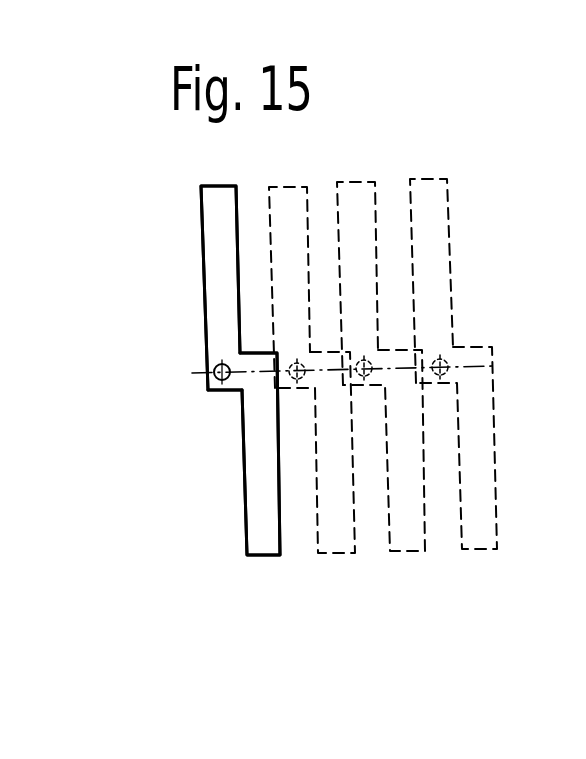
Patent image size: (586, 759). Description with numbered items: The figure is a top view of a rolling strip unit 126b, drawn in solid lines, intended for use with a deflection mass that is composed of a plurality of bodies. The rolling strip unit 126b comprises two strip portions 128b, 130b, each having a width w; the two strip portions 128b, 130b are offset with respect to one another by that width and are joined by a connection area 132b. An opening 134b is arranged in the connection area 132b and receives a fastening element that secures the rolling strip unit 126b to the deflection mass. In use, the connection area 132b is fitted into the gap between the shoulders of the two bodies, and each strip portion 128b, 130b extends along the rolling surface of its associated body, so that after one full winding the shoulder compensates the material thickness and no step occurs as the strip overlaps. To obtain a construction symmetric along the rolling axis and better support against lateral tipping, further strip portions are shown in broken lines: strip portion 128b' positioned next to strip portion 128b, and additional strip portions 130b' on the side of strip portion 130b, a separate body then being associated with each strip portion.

The rolling strip unit 126b is at (168, 352).
The strip portion 128b is at (166, 277).
The strip portion 130b is at (220, 474).
The connection area 132b is at (232, 393).
The opening 134b is at (224, 381).
The strip portion 128b' is at (361, 247).
The strip portion 130b' is at (386, 500).